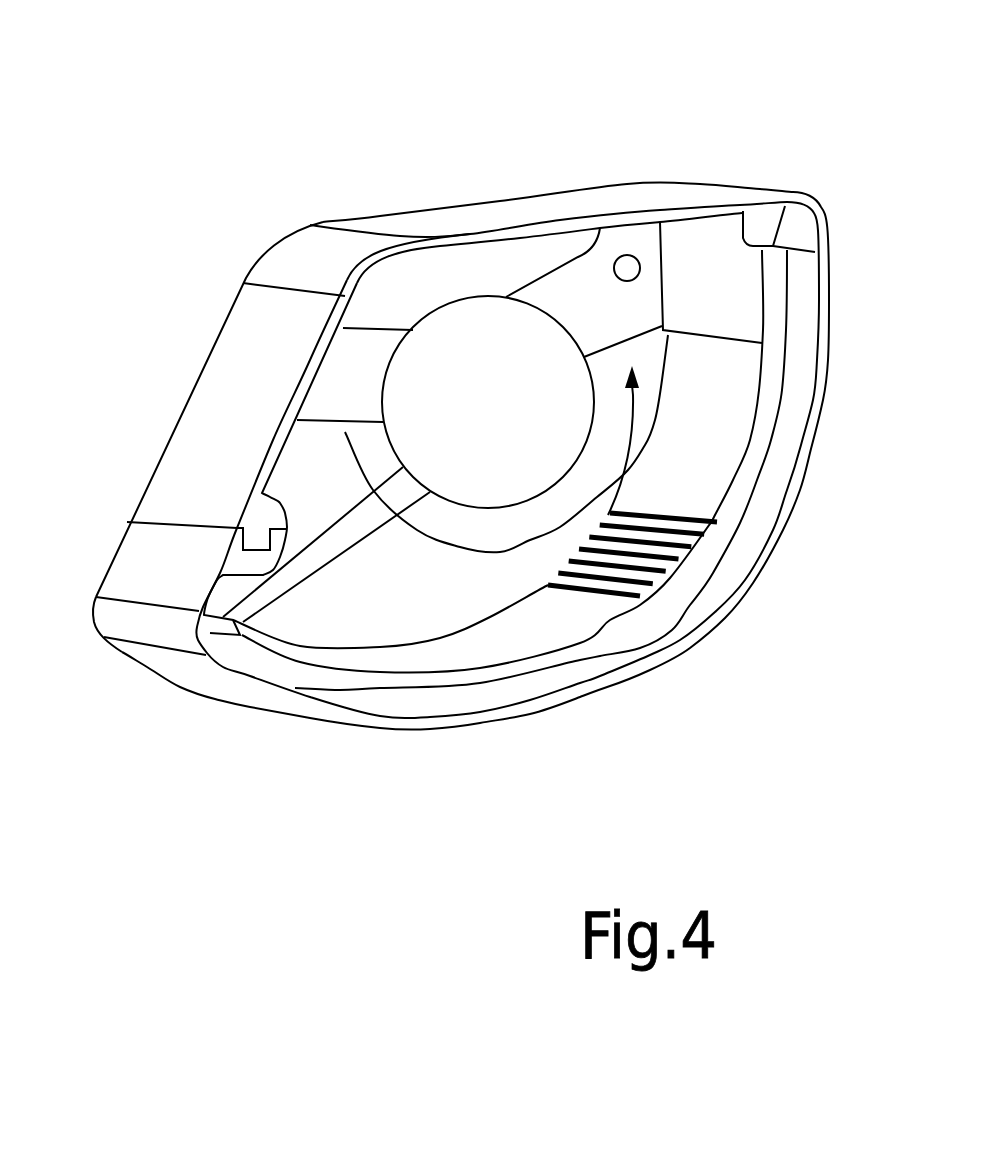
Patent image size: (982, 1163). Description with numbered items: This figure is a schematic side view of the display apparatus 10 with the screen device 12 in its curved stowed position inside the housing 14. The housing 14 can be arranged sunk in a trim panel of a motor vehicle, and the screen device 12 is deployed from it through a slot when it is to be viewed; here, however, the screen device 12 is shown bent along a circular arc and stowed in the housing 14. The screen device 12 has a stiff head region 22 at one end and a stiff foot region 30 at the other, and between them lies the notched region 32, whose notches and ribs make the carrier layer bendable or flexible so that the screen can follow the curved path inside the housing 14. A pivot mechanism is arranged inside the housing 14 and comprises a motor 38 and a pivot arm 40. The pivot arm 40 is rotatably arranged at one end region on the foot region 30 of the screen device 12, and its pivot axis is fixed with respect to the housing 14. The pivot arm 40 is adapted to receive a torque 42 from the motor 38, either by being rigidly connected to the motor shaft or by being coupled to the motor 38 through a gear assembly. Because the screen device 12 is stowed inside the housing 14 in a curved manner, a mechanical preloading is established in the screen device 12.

The display apparatus 10 is at (168, 118).
The screen device 12 is at (765, 457).
The housing 14 is at (483, 243).
The head region 22 is at (740, 303).
The foot region 30 is at (303, 665).
The notched region 32 is at (637, 612).
The motor 38 is at (507, 422).
The pivot arm 40 is at (345, 548).
The torque 42 is at (457, 545).